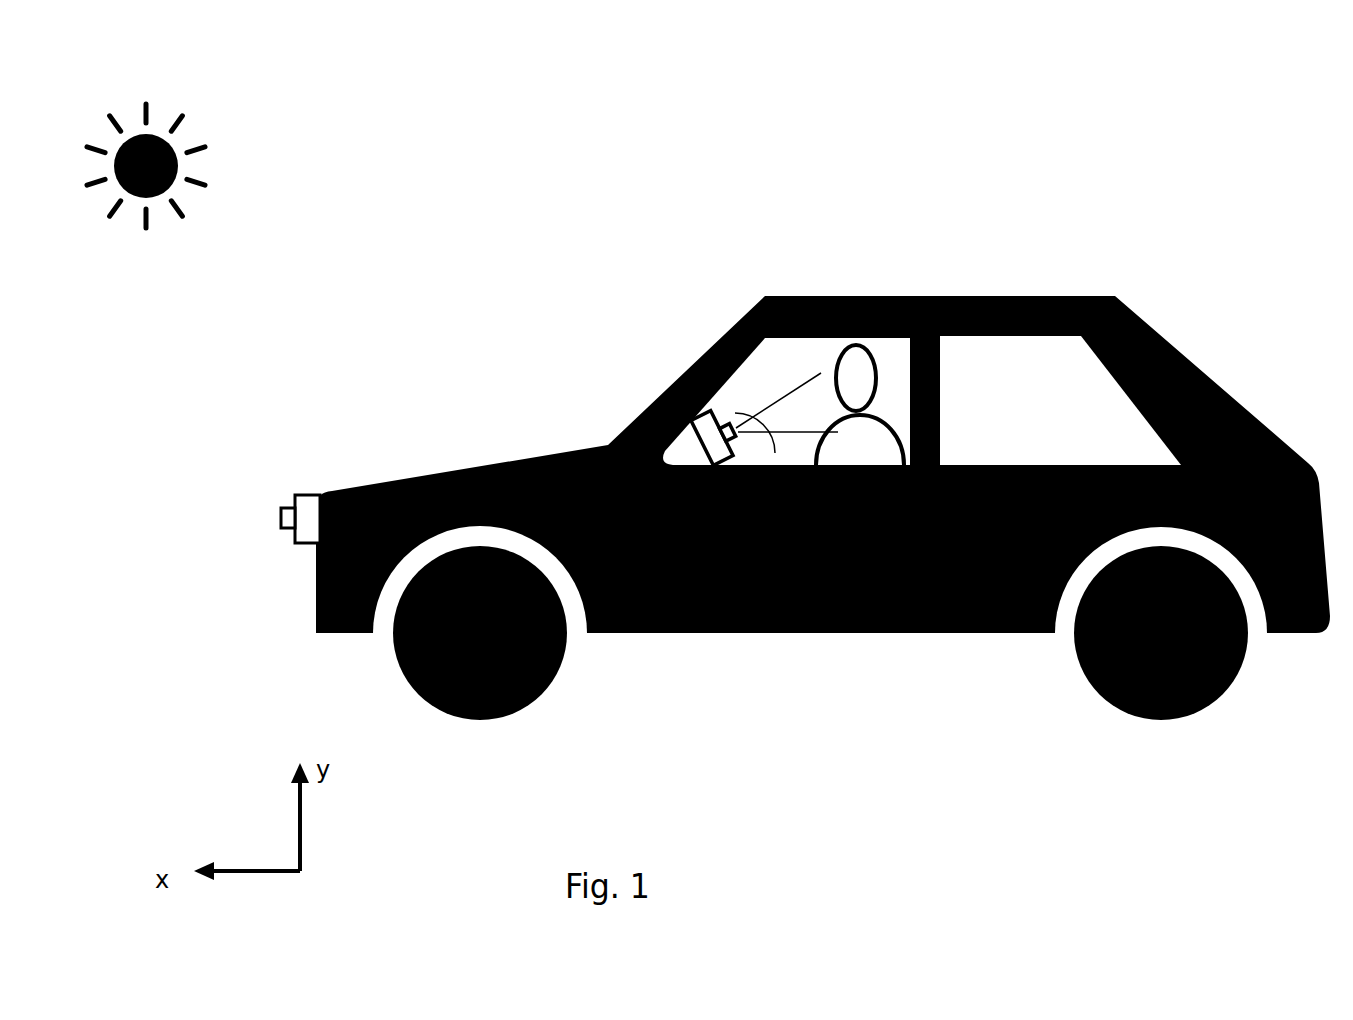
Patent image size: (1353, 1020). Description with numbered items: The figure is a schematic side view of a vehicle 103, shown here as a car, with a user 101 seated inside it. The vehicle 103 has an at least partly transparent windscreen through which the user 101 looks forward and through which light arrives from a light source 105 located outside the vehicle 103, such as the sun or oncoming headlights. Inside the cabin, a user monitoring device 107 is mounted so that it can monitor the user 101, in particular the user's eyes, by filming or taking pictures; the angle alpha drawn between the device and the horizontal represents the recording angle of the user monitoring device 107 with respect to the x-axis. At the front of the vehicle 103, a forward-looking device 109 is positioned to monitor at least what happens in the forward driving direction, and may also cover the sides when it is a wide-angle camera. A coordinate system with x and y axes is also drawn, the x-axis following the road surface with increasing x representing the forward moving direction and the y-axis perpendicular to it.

The user 101 is at (845, 365).
The vehicle 103 is at (948, 623).
The light source 105 is at (145, 127).
The user monitoring device 107 is at (687, 358).
The forward-looking device 109 is at (302, 505).